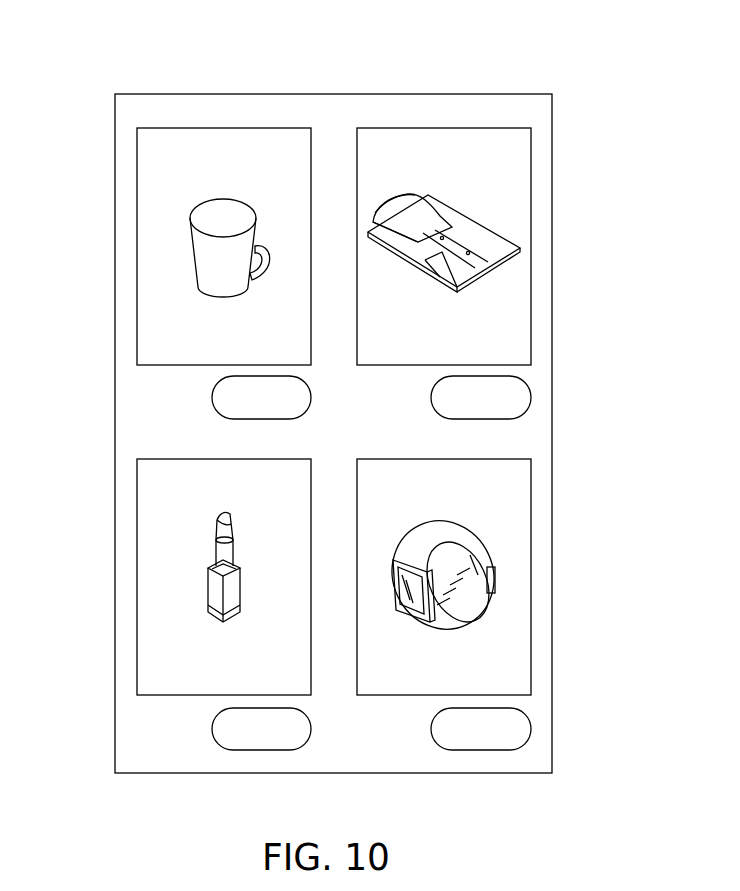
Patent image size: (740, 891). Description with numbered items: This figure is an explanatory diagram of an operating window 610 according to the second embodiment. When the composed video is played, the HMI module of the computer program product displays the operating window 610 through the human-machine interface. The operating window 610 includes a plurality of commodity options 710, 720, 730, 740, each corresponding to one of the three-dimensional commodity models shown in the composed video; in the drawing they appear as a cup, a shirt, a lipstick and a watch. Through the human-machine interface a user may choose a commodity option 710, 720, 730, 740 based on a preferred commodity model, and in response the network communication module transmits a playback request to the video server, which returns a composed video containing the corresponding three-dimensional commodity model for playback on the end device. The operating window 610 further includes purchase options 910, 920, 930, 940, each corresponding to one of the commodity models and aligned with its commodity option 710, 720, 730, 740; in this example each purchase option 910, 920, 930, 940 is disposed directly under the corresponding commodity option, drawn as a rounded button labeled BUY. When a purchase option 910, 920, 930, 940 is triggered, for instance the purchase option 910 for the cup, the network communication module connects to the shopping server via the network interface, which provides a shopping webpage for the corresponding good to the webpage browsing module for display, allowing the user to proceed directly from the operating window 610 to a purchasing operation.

The operating window 610 is at (137, 94).
The commodity option 710 is at (137, 195).
The commodity option 720 is at (531, 193).
The commodity option 730 is at (137, 525).
The commodity option 740 is at (531, 527).
The purchase option 910 is at (212, 386).
The purchase option 920 is at (531, 385).
The purchase option 930 is at (212, 722).
The purchase option 940 is at (531, 715).